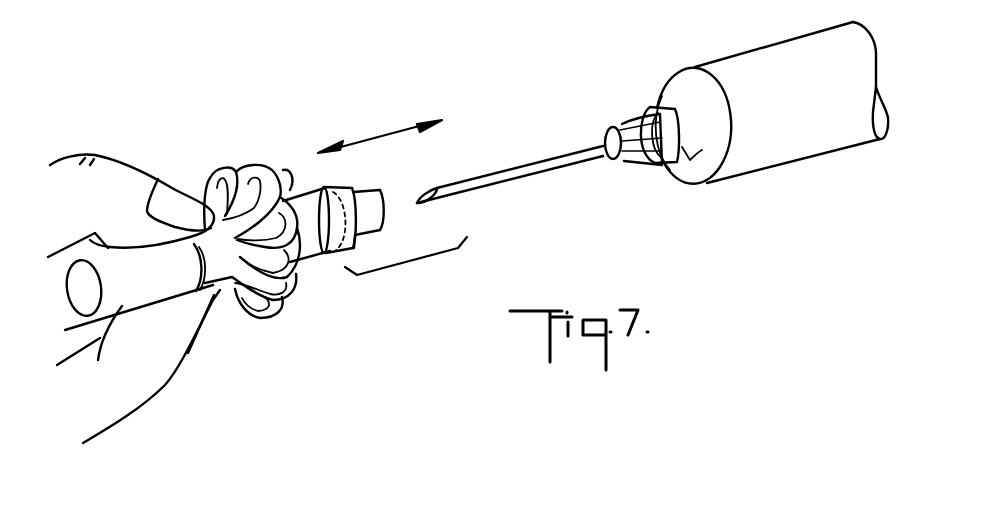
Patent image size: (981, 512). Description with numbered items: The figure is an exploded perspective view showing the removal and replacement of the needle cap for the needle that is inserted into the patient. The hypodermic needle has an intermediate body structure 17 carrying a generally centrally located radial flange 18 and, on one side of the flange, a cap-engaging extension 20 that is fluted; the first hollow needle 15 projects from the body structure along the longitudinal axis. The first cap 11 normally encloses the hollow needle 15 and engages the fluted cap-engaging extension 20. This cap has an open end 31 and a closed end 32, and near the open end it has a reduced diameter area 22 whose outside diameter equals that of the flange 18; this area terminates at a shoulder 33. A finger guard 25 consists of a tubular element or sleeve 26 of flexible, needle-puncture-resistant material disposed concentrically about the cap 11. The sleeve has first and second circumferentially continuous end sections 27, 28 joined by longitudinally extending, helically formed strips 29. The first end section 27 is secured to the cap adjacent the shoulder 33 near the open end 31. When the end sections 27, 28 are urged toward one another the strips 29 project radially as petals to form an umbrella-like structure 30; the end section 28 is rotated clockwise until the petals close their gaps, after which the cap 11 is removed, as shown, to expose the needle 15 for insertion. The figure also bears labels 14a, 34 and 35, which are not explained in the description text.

The first cap 11 is at (122, 311).
The catheter 14a is at (327, 253).
The first hollow needle 15 is at (513, 167).
The intermediate body structure 17 is at (639, 170).
The radial flange 18 is at (657, 100).
The cap-engaging extension 20 is at (640, 122).
The reduced diameter area 22 is at (356, 190).
The finger guard 25 is at (201, 179).
The tubular element or sleeve 26 is at (184, 290).
The first end section 27 is at (310, 263).
The second end section 28 is at (213, 292).
The strips 29 is at (236, 173).
The umbrella-like structure 30 is at (234, 157).
The open end 31 is at (383, 223).
The closed end 32 is at (75, 283).
The shoulder 33 is at (347, 190).
The needle hub flange 34 is at (687, 167).
The protective cap 35 is at (788, 143).